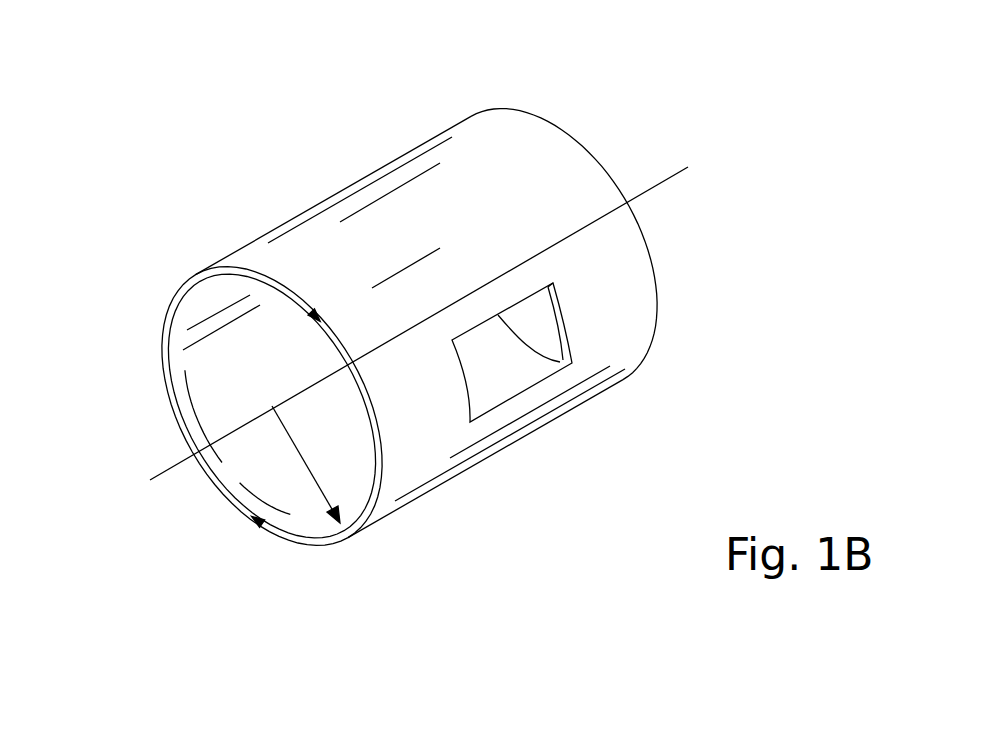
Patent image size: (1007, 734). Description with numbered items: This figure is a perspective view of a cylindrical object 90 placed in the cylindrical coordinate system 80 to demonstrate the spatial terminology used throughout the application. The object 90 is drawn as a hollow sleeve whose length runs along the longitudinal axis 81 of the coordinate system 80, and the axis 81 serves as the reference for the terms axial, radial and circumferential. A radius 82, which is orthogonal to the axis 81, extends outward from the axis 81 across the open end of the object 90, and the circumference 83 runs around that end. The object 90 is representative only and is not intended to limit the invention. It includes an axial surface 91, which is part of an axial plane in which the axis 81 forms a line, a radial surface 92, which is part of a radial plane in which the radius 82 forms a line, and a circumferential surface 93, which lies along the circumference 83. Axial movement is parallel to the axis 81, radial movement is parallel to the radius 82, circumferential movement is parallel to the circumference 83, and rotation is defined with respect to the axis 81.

The cylindrical coordinate system 80 is at (592, 127).
The longitudinal axis 81 is at (153, 481).
The radius 82 is at (312, 472).
The circumference 83 is at (177, 311).
The cylindrical object 90 is at (453, 112).
The axial surface 91 is at (543, 380).
The radial surface 92 is at (290, 535).
The circumferential surface 93 is at (387, 213).